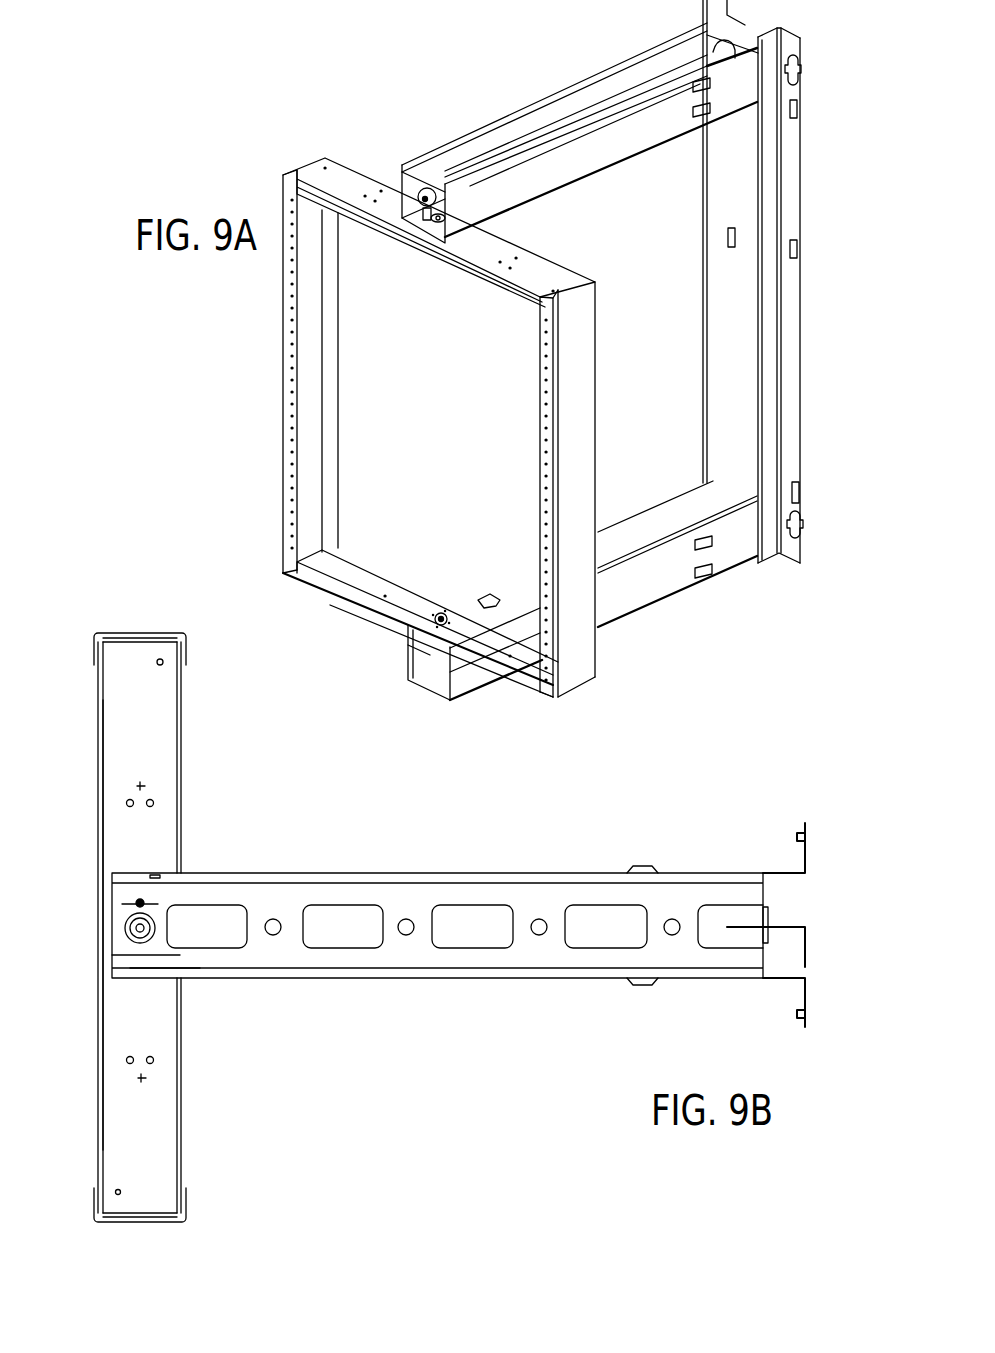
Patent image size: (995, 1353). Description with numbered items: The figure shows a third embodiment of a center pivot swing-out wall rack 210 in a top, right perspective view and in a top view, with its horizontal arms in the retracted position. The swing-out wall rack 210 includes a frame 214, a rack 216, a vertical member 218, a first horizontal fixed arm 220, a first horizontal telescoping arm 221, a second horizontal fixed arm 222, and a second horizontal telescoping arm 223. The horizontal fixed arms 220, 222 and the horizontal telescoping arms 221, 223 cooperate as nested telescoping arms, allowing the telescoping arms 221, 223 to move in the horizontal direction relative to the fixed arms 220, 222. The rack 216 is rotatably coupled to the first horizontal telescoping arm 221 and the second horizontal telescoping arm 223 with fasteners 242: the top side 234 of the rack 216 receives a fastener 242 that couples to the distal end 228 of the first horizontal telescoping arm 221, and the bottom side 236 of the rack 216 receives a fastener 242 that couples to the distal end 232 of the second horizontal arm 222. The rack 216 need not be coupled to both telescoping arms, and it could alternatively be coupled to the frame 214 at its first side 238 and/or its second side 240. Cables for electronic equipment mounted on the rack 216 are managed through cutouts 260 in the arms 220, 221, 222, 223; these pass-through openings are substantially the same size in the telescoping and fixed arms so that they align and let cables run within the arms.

In FIG. 9A, the swing-out wall rack 210 is at (319, 71).
In FIG. 9A, the frame 214 is at (757, 582).
In FIG. 9A, the rack 216 is at (252, 499).
In FIG. 9B, the rack 216 is at (99, 1099).
In FIG. 9A, the vertical member 218 is at (733, 400).
In FIG. 9B, the vertical member 218 is at (785, 980).
In FIG. 9A, the first horizontal fixed arm 220 is at (573, 103).
In FIG. 9B, the first horizontal fixed arm 220 is at (130, 880).
In FIG. 9A, the first horizontal telescoping arm 221 is at (473, 170).
In FIG. 9B, the first horizontal telescoping arm 221 is at (128, 955).
In FIG. 9A, the second horizontal fixed arm 222 is at (648, 588).
In FIG. 9A, the second horizontal telescoping arm 223 is at (405, 645).
In FIG. 9A, the distal end 228 is at (503, 197).
In FIG. 9B, the distal end 228 is at (148, 990).
In FIG. 9A, the distal end 232 is at (470, 600).
In FIG. 9A, the top side 234 is at (540, 273).
In FIG. 9B, the top side 234 is at (155, 727).
In FIG. 9A, the bottom side 236 is at (340, 595).
In FIG. 9A, the first side 238 is at (286, 378).
In FIG. 9B, the first side 238 is at (145, 633).
In FIG. 9A, the second side 240 is at (582, 455).
In FIG. 9B, the second side 240 is at (140, 1225).
In FIG. 9A, the fastener 242 is at (433, 230).
In FIG. 9B, the fastener 242 is at (122, 927).
In FIG. 9A, the cutouts 260 is at (487, 605).
In FIG. 9B, the cutouts 260 is at (327, 925).